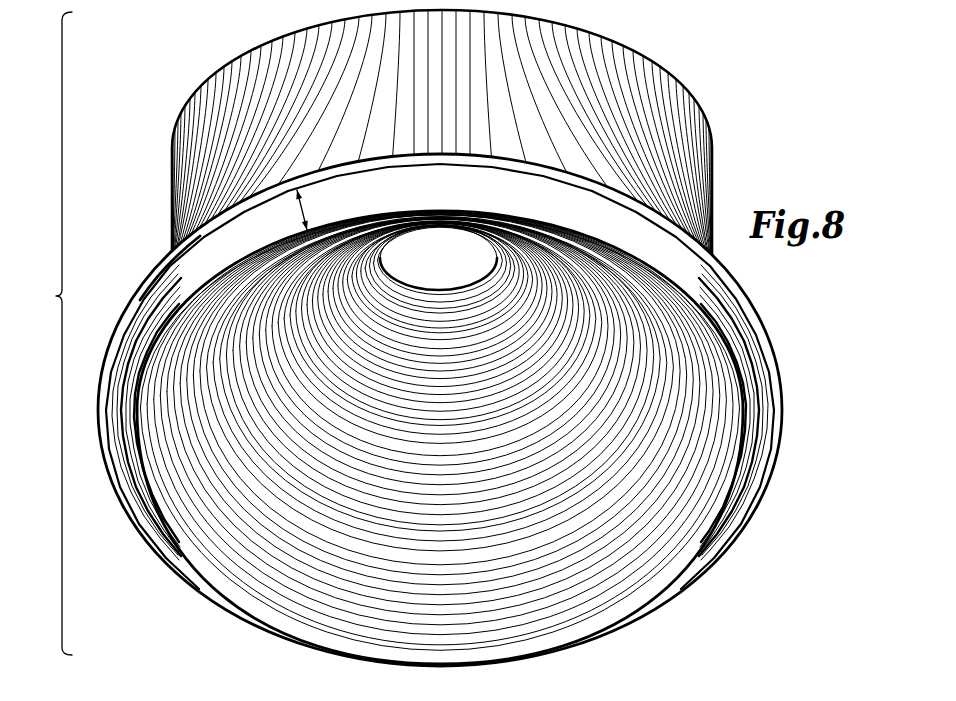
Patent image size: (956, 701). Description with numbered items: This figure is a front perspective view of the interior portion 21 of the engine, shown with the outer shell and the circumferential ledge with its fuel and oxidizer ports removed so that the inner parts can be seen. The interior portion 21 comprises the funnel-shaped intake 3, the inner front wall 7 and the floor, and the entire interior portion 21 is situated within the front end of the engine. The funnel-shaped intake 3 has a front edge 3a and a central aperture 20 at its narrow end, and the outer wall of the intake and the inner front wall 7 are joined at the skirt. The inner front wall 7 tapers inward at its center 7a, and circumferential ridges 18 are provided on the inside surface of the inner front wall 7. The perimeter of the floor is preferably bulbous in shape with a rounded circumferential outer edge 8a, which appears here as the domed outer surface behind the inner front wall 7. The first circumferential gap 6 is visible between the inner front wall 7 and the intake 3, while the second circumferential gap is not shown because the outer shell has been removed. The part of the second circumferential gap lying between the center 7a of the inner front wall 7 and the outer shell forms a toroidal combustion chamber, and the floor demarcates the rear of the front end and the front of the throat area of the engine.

The interior portion 21 is at (49, 333).
The rounded outer edge 8a is at (653, 87).
The inner front wall 7 is at (748, 356).
The center 7a is at (167, 247).
The circumferential ridges 18 is at (717, 325).
The funnel-shaped intake 3 is at (217, 530).
The front edge 3a is at (613, 627).
The central aperture 20 is at (405, 250).
The first circumferential gap 6 is at (298, 212).